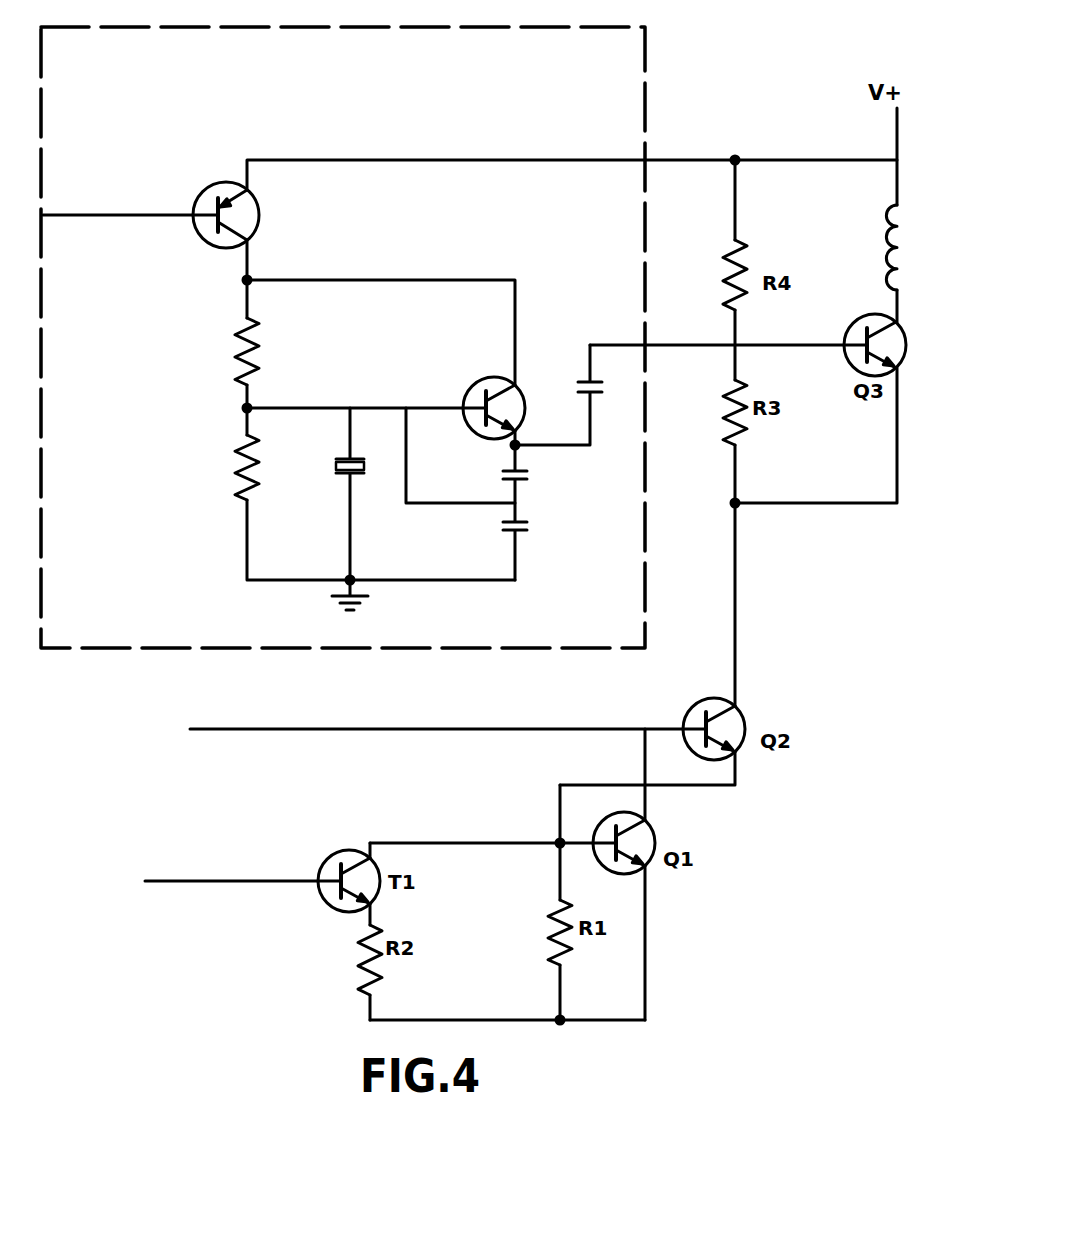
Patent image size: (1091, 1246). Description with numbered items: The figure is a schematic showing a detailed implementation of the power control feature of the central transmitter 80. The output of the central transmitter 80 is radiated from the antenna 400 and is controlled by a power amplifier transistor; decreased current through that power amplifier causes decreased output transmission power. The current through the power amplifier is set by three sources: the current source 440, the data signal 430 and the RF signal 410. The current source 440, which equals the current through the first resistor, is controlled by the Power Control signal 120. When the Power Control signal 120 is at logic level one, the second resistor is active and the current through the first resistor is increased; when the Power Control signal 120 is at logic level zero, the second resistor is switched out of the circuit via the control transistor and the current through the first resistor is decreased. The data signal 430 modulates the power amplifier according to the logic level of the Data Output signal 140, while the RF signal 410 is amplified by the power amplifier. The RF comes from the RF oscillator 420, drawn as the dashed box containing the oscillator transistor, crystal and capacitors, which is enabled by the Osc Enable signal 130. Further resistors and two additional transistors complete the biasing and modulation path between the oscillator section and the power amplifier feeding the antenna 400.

The central transmitter 80 is at (251, 1031).
The Power Control signal 120 is at (196, 884).
The Osc Enable signal 130 is at (105, 217).
The Data Output signal 140 is at (243, 731).
The antenna 400 is at (888, 246).
The RF signal 410 is at (678, 347).
The RF oscillator 420 is at (633, 23).
The data signal 430 is at (736, 603).
The current source 440 is at (713, 787).